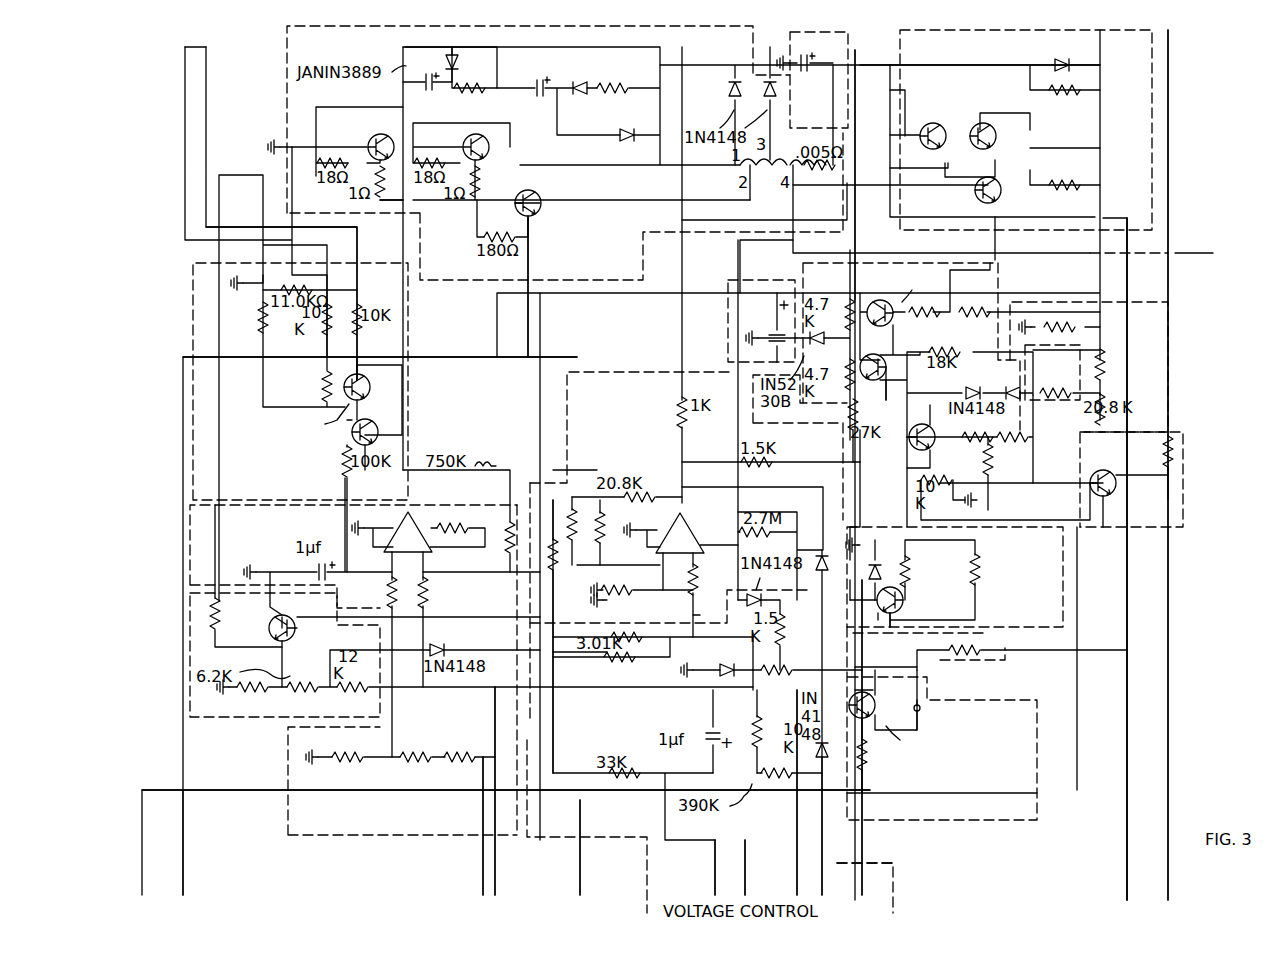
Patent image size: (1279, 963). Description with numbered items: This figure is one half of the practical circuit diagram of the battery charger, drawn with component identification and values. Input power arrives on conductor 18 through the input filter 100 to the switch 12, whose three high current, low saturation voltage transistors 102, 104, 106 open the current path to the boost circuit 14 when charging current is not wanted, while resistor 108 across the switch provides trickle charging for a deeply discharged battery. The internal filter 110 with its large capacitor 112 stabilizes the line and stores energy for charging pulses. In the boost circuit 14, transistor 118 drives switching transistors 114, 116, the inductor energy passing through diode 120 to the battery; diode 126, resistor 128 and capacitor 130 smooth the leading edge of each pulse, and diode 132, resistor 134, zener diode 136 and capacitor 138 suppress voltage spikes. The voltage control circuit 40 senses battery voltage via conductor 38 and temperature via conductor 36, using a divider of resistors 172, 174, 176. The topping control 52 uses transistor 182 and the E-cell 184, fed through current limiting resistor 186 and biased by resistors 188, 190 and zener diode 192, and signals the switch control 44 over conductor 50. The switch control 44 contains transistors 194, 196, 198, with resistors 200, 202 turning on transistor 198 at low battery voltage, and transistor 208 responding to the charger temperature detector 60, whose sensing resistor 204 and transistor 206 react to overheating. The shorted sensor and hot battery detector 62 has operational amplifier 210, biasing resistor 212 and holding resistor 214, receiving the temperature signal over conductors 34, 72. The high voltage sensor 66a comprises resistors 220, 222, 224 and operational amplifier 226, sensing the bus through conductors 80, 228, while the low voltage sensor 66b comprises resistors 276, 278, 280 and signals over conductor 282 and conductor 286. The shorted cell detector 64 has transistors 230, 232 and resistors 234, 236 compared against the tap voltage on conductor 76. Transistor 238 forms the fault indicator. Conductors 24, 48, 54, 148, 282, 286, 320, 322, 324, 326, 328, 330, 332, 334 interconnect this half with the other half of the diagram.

The switch 12 is at (1024, 32).
The boost circuit 14 is at (287, 82).
The conductor 18 is at (1100, 54).
The electrical conductor 24 is at (531, 272).
The conductor 34 is at (862, 72).
The conductor 36 is at (692, 622).
The conductor 38 is at (434, 354).
The voltage control circuit 40 is at (899, 878).
The switch control 44 is at (1072, 580).
The electrical conductor 48 is at (796, 868).
The conductor 50 is at (860, 664).
The topping control 52 is at (1039, 768).
The electrical conductor 54 is at (869, 854).
The charger temperature detector 60 is at (234, 720).
The shorted sensor and hot battery detector 62 is at (602, 368).
The shorted cell detector 64 is at (166, 324).
The high voltage sensor 66a is at (288, 768).
The low voltage sensor 66b is at (1153, 298).
The conductor 72 is at (682, 598).
The conductor 76 is at (357, 237).
The conductor 80 is at (1096, 290).
The input filter 100 is at (732, 328).
The transistor 102 is at (936, 160).
The transistor 104 is at (1020, 164).
The transistor 106 is at (998, 206).
The resistor 108 is at (1082, 102).
The internal filter 110 is at (860, 40).
The capacitor 112 is at (806, 54).
The transistor 114 is at (370, 143).
The transistor 116 is at (468, 134).
The transistor 118 is at (528, 196).
The diode 120 is at (1164, 454).
The diode 126 is at (458, 49).
The resistor 128 is at (460, 78).
The capacitor 130 is at (411, 81).
The diode 132 is at (600, 146).
The resistor 134 is at (623, 96).
The zener diode 136 is at (576, 78).
The capacitor 138 is at (545, 108).
The electrical conductor 148 is at (1187, 250).
The resistor 172 is at (647, 660).
The resistor 174 is at (559, 586).
The resistor 176 is at (549, 495).
The transistor 182 is at (893, 688).
The E-cell 184 is at (924, 718).
The current limiting resistor 186 is at (870, 775).
The resistor 188 is at (992, 640).
The resistor 190 is at (794, 664).
The zener diode 192 is at (711, 688).
The transistor 194 is at (884, 328).
The transistor 196 is at (866, 376).
The transistor 198 is at (919, 418).
The resistor 200 is at (1007, 450).
The resistor 202 is at (1015, 432).
The temperature sensing resistor 204 is at (218, 608).
The transistor 206 is at (296, 636).
The transistor 208 is at (913, 579).
The operational amplifier 210 is at (684, 514).
The biasing resistor 212 is at (578, 464).
The holding resistor 214 is at (600, 550).
The resistor 220 is at (385, 754).
The resistor 222 is at (394, 734).
The resistor 224 is at (439, 730).
The operational amplifier 226 is at (429, 550).
The conductor 228 is at (489, 410).
The transistor 230 is at (380, 388).
The transistor 232 is at (398, 424).
The resistor 234 is at (262, 319).
The resistor 236 is at (316, 379).
The transistor 238 is at (1113, 500).
The resistor 276 is at (1109, 362).
The resistor 278 is at (1036, 378).
The resistor 280 is at (1044, 337).
The conductor 282 is at (203, 790).
The conductor 286 is at (1115, 882).
The electrical conductor 320 is at (185, 880).
The conductor 322 is at (482, 858).
The electrical conductor 324 is at (482, 884).
The electrical conductor 326 is at (580, 882).
The electrical conductor 328 is at (715, 872).
The electrical conductor 330 is at (749, 890).
The electrical conductor 332 is at (840, 895).
The electrical conductor 334 is at (1171, 880).